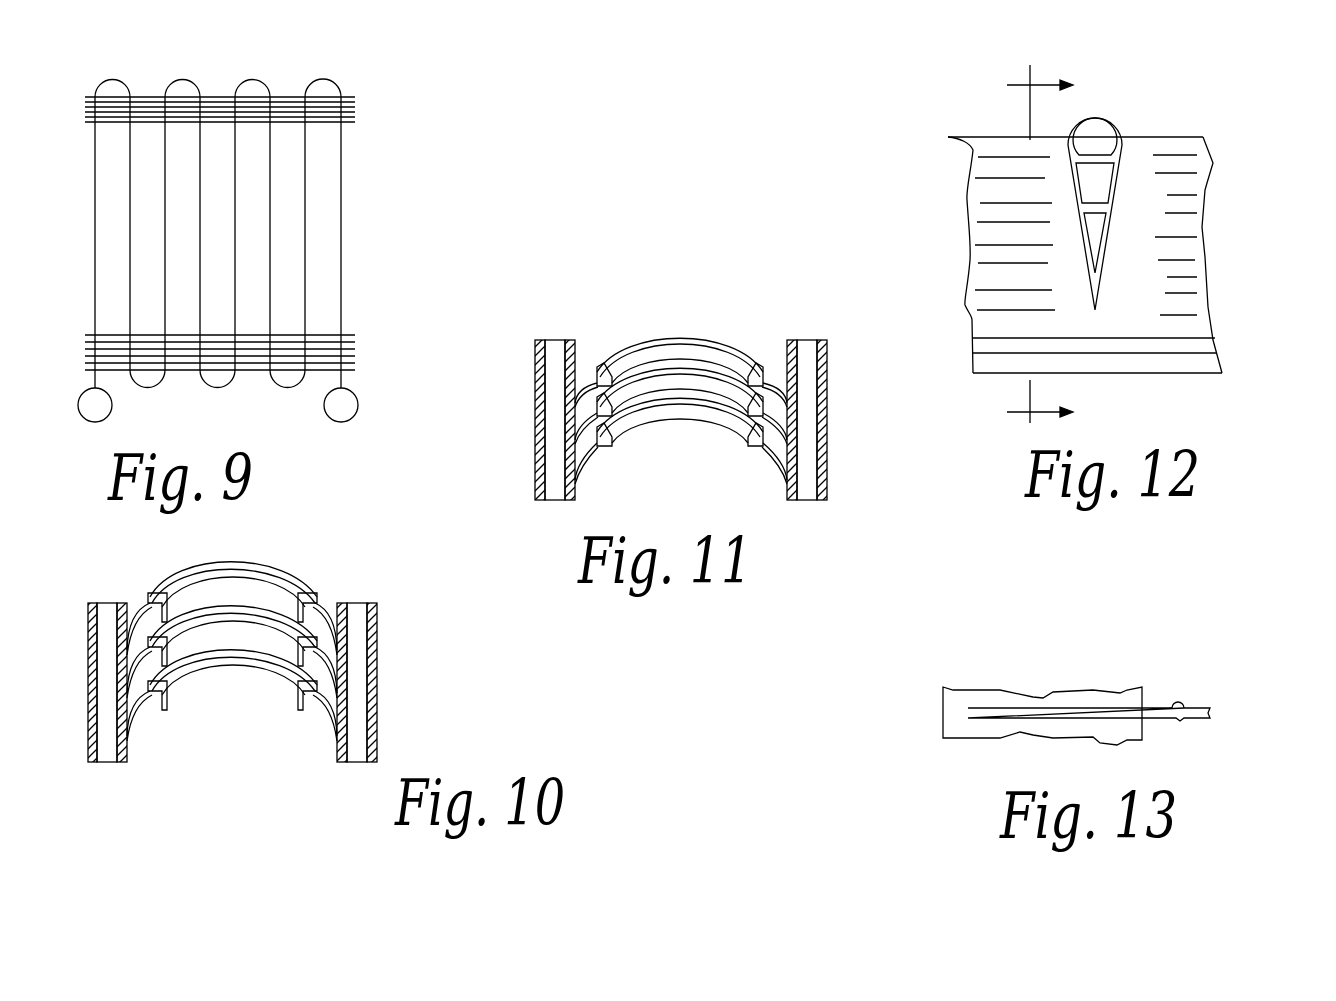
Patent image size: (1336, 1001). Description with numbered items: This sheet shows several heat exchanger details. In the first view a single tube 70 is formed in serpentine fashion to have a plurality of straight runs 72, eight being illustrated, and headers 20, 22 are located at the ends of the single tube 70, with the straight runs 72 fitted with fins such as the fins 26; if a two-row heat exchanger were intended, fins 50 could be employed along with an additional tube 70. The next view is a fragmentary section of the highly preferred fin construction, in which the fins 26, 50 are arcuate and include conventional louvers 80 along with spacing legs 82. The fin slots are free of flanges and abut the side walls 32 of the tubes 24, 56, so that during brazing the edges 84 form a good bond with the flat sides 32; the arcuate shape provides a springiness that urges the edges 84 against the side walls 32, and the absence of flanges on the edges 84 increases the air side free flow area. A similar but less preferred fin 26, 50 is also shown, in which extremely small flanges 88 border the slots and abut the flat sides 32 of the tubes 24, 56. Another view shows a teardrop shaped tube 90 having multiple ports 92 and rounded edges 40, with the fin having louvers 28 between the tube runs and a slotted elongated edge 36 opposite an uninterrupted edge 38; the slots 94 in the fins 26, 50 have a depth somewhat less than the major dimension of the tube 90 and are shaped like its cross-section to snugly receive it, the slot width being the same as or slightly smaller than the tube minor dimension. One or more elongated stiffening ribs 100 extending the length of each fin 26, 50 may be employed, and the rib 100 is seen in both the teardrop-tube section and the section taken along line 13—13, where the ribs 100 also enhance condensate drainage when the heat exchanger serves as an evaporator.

In FIG. 9, the header 20 is at (85, 418).
In FIG. 9, the header 22 is at (328, 418).
In FIG. 9, the single tube 70 is at (342, 212).
In FIG. 9, the straight runs 72 is at (273, 137).
In FIG. 9, the fin 26 is at (262, 233).
In FIG. 10, the fin 26 is at (299, 629).
In FIG. 11, the fin 26 is at (715, 371).
In FIG. 12, the fin 26 is at (1092, 231).
In FIG. 13, the fin 26 is at (1112, 702).
In FIG. 9, the fin 50 is at (347, 333).
In FIG. 10, the fin 50 is at (335, 610).
In FIG. 11, the fin 50 is at (780, 365).
In FIG. 12, the fin 50 is at (1092, 231).
In FIG. 13, the fin 50 is at (1112, 702).
In FIG. 10, the tube 24 is at (276, 730).
In FIG. 11, the tube 24 is at (687, 405).
In FIG. 10, the tube 56 is at (276, 730).
In FIG. 11, the tube 56 is at (687, 405).
In FIG. 10, the side walls 32 is at (125, 763).
In FIG. 11, the side walls 32 is at (575, 345).
In FIG. 10, the louvers 80 is at (276, 642).
In FIG. 11, the louvers 80 is at (697, 398).
In FIG. 10, the spacing legs 82 is at (150, 598).
In FIG. 10, the edges 84 is at (127, 733).
In FIG. 11, the flanges 88 is at (575, 480).
In FIG. 12, the rounded edges 40 is at (1177, 177).
In FIG. 12, the ports 92 is at (1100, 140).
In FIG. 12, the teardrop shaped tube 90 is at (1112, 173).
In FIG. 12, the slots 94 is at (1110, 220).
In FIG. 12, the louvers 28 is at (1188, 287).
In FIG. 12, the elongated edge 36 is at (1203, 137).
In FIG. 12, the opposite edge 38 is at (1195, 370).
In FIG. 12, the stiffening rib 100 is at (1200, 350).
In FIG. 13, the stiffening rib 100 is at (1178, 699).
In FIG. 12, the section line 13 is at (1035, 240).